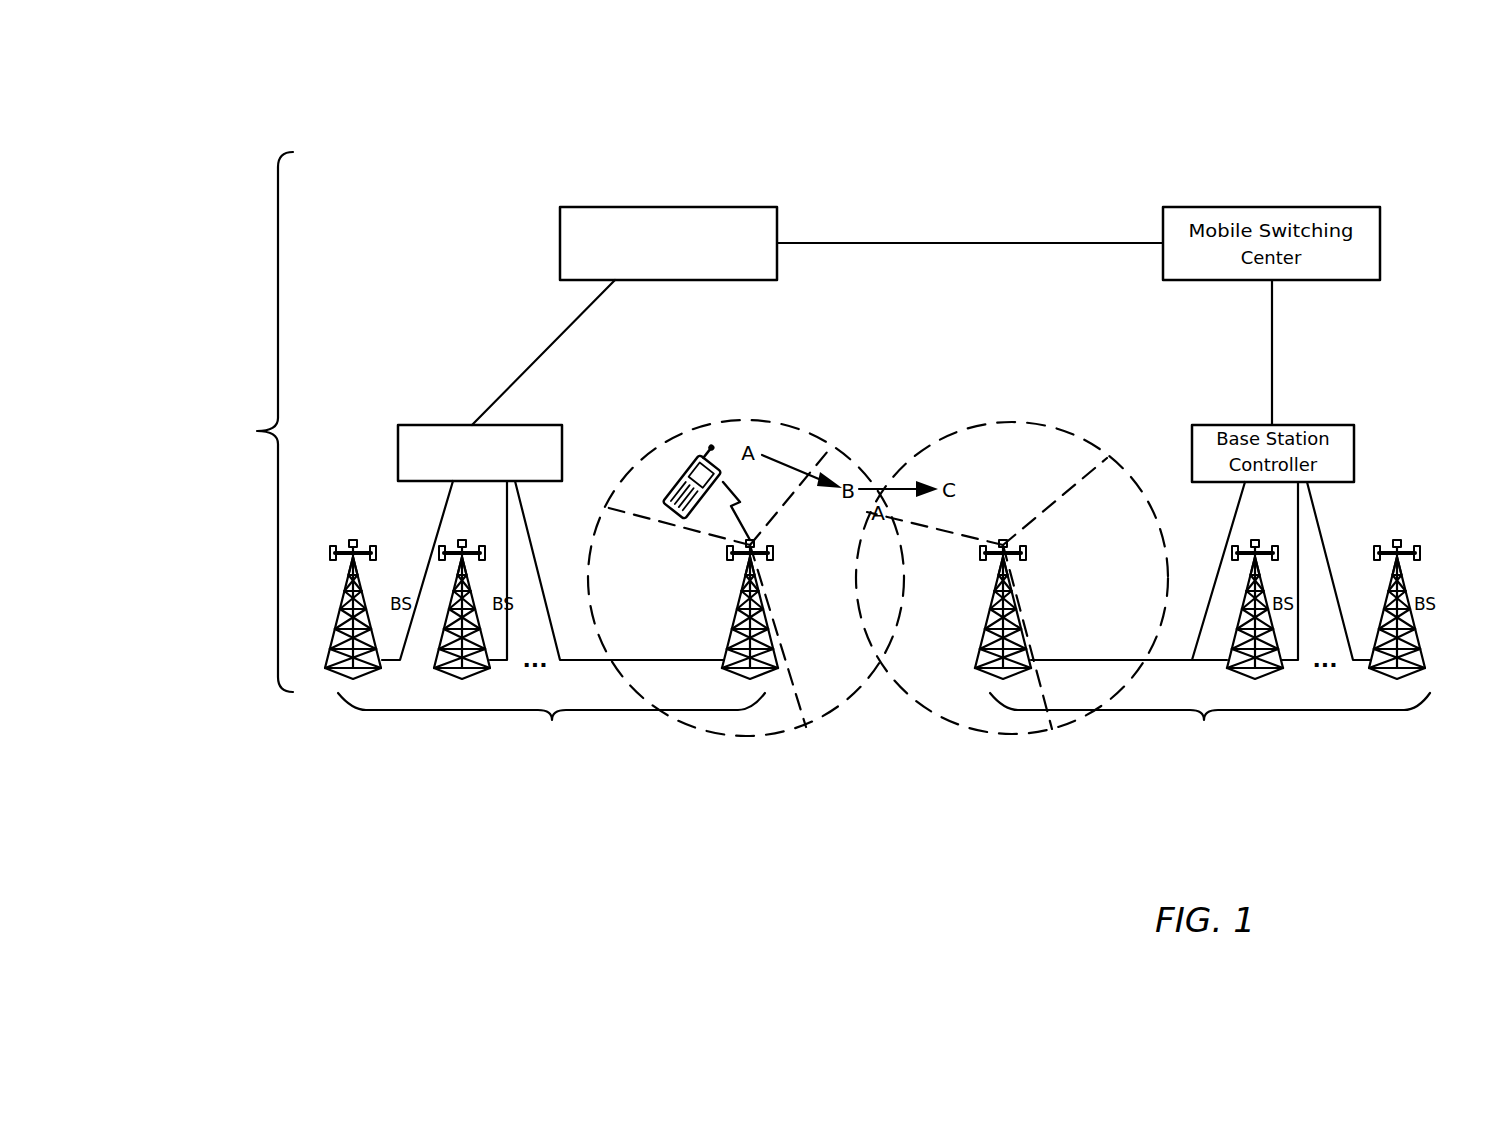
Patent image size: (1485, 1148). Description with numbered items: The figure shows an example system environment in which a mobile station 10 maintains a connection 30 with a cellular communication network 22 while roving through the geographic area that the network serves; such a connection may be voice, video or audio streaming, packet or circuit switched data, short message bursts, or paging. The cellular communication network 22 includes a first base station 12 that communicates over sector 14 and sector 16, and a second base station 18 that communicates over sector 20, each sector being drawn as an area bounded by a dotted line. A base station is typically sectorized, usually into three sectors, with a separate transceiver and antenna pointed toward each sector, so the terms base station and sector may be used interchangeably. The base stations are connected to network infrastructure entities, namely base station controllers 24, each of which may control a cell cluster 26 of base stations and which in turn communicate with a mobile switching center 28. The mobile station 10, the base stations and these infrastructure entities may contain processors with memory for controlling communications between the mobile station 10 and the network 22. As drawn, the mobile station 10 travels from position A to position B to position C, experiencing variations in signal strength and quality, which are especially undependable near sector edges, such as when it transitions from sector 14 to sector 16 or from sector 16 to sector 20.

The mobile station 10 is at (683, 475).
The first base station 12 is at (785, 592).
The sector 14 is at (788, 433).
The sector 16 is at (852, 463).
The second base station 18 is at (977, 595).
The sector 20 is at (1003, 432).
The cellular communication network 22 is at (195, 470).
The base station controller 24 is at (532, 425).
The cell cluster 26 is at (884, 738).
The mobile switching center 28 is at (608, 207).
The connection 30 is at (732, 511).